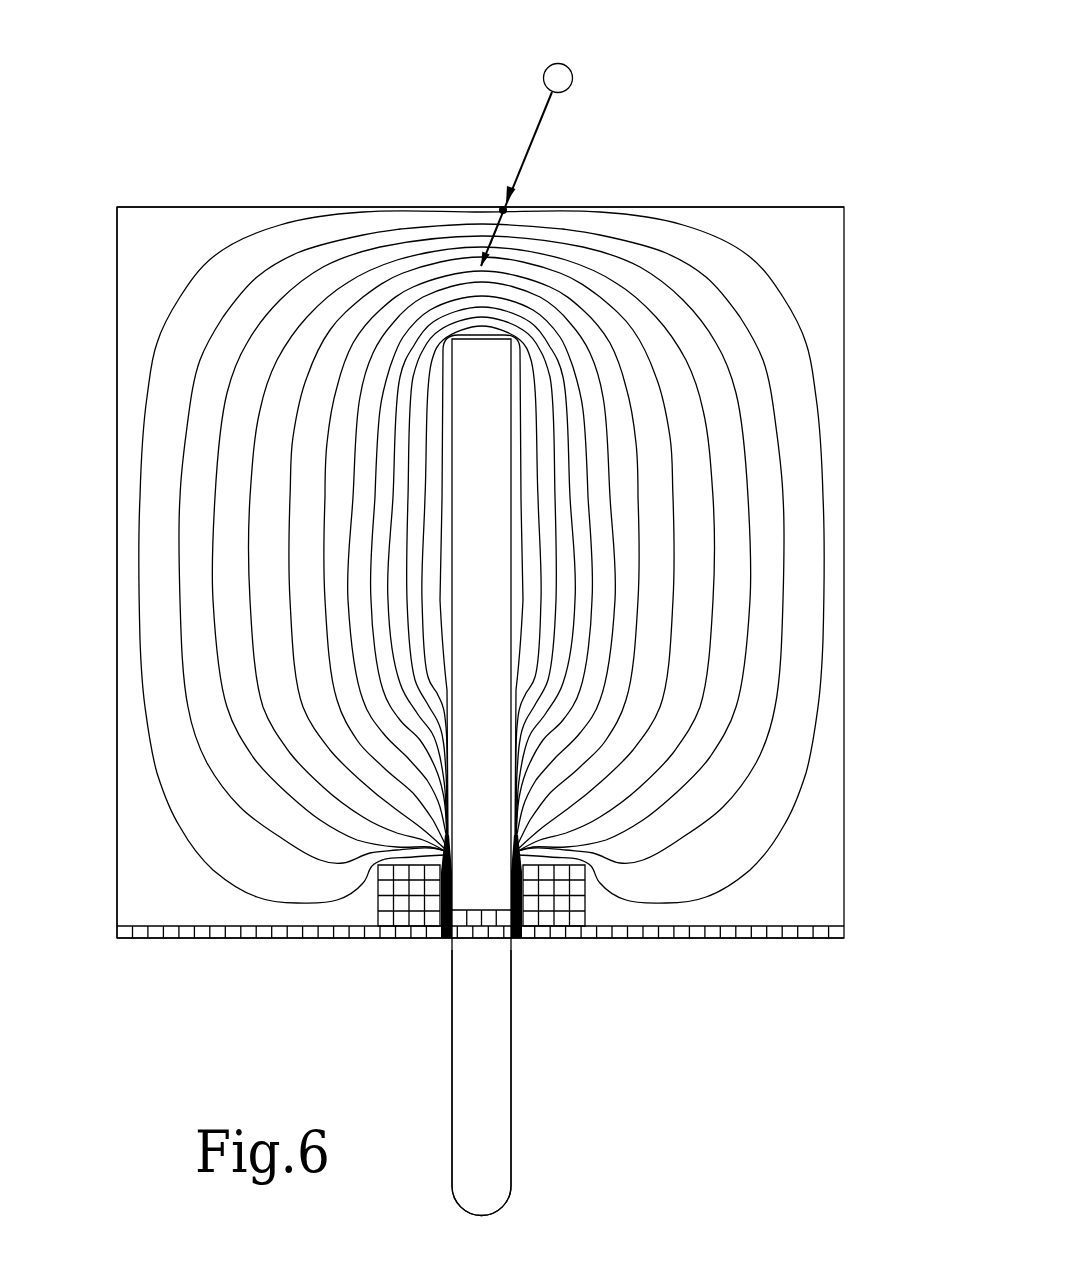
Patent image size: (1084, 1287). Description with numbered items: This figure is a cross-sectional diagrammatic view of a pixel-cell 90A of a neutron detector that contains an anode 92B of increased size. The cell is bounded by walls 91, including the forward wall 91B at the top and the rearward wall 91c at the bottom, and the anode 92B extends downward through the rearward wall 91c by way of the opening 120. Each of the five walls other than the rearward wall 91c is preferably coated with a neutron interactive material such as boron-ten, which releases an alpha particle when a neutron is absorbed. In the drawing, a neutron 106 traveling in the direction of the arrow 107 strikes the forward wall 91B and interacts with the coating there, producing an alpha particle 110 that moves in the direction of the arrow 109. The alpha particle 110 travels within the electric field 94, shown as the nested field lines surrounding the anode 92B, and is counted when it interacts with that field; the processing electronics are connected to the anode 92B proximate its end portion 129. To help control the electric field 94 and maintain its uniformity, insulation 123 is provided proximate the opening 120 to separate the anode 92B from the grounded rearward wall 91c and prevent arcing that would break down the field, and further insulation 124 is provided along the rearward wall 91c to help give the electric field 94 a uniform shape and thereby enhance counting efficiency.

The pixel-cell 90A is at (847, 270).
The walls 91 is at (117, 735).
The forward wall 91B is at (724, 207).
The rearward wall 91c is at (667, 940).
The anode 92B is at (500, 589).
The electric field 94 is at (788, 590).
The neutron 106 is at (567, 65).
The arrow 107 is at (531, 138).
The arrow 109 is at (493, 234).
The alpha particle 110 is at (509, 206).
The opening 120 is at (511, 940).
The insulation 123 is at (420, 938).
The insulation 124 is at (790, 940).
The end portion 129 is at (495, 1145).